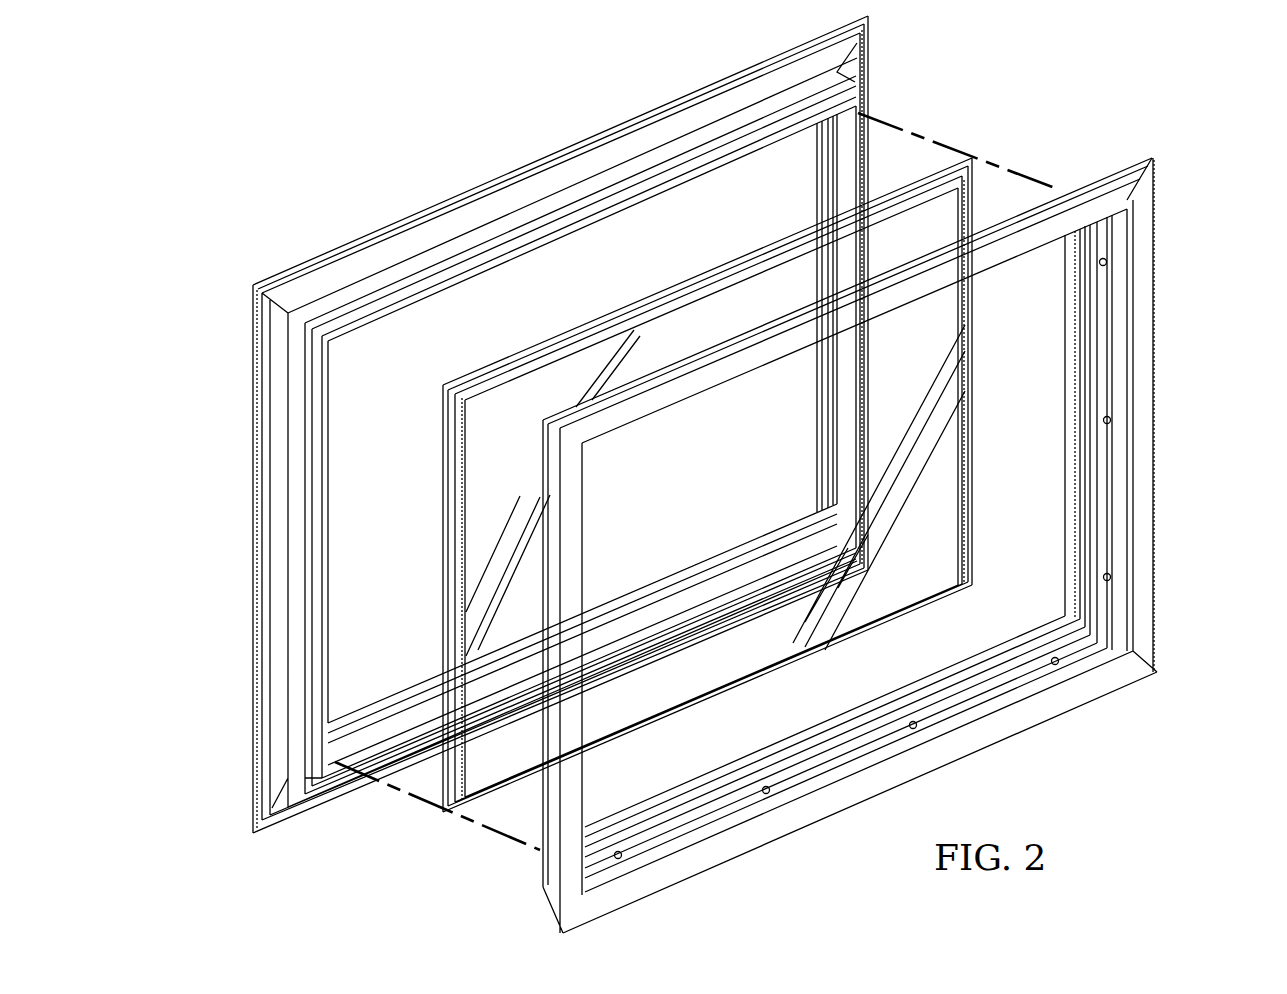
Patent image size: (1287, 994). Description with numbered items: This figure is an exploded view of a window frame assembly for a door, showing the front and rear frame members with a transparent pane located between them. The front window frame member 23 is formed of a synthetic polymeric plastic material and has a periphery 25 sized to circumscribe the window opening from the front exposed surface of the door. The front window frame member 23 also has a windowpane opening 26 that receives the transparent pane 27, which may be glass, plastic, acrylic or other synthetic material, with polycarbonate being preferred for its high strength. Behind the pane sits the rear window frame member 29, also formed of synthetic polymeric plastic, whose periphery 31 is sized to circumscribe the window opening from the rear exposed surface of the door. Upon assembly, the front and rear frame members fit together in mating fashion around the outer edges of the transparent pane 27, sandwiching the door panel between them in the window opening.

The front window frame member 23 is at (223, 421).
The periphery 25 is at (673, 143).
The windowpane opening 26 is at (813, 181).
The transparent pane 27 is at (594, 331).
The rear window frame member 29 is at (1179, 528).
The periphery 31 is at (1063, 196).